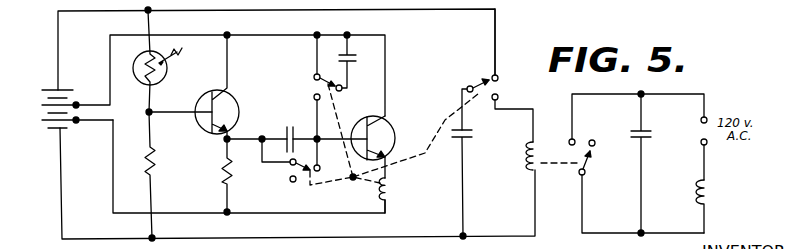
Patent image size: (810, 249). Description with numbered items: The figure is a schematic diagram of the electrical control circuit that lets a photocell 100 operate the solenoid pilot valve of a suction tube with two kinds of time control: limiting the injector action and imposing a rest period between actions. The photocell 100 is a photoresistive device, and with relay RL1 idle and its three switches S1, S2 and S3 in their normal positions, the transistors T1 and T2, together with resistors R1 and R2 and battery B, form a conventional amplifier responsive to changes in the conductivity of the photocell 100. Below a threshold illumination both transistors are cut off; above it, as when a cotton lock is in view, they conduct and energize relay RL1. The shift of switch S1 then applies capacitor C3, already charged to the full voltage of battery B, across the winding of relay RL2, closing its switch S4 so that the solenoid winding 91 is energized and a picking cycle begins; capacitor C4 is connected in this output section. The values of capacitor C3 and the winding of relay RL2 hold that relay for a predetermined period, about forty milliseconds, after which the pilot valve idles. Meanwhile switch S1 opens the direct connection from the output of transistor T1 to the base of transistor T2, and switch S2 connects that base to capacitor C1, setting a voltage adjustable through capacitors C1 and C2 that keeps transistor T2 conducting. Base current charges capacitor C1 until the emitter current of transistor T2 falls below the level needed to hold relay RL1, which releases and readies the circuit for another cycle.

The photocell 100 is at (133, 69).
The solenoid winding 91 is at (712, 193).
The battery B is at (66, 111).
The resistor R1 is at (162, 175).
The resistor R2 is at (235, 175).
The transistor T1 is at (217, 87).
The transistor T2 is at (379, 140).
The capacitor C1 is at (359, 61).
The capacitor C2 is at (286, 131).
The capacitor C3 is at (473, 183).
The capacitor C4 is at (649, 163).
The switch S1 is at (291, 169).
The switch S2 is at (316, 87).
The switch S3 is at (497, 75).
The switch S4 is at (597, 157).
The relay RL1 is at (399, 195).
The relay RL2 is at (553, 166).